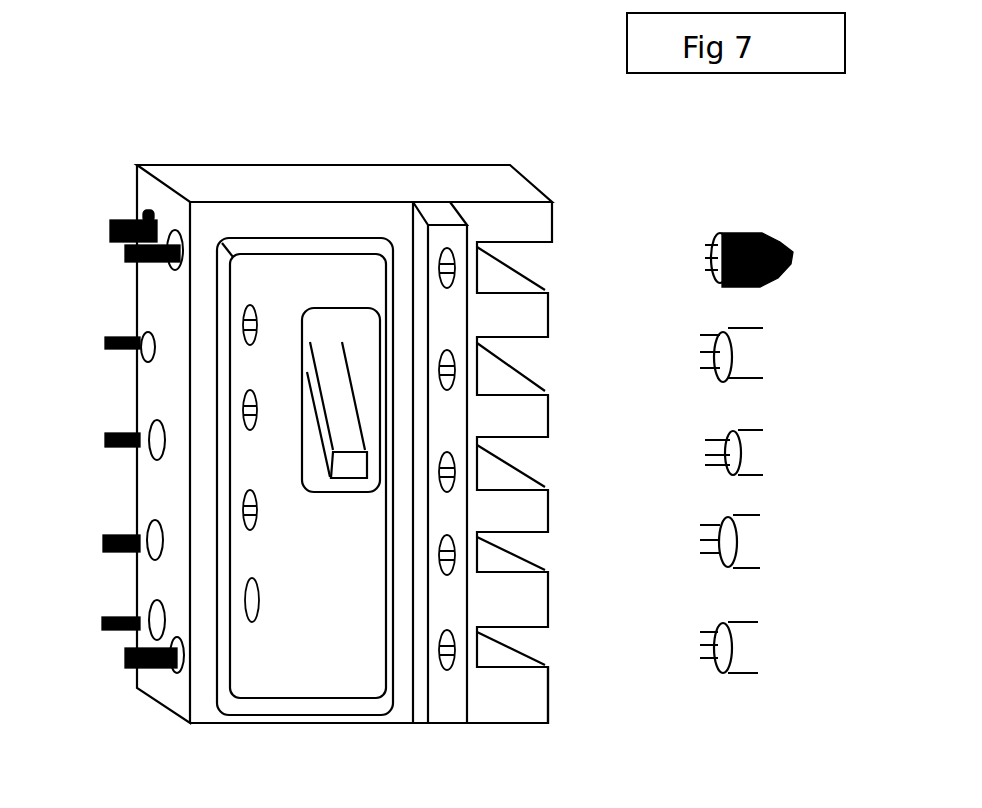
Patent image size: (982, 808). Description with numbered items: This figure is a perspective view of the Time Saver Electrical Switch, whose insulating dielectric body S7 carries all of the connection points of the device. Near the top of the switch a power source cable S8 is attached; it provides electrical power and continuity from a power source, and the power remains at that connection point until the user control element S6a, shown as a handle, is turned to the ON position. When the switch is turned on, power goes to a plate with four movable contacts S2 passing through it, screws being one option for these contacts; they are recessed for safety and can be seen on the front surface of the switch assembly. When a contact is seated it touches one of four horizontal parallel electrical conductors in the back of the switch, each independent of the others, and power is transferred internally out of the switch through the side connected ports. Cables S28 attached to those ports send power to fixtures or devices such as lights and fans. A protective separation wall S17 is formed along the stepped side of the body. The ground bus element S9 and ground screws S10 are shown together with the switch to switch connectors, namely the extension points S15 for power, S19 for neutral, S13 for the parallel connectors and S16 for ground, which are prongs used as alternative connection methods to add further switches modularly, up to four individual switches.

The dielectric body S7 is at (463, 192).
The power source cable S8 is at (738, 235).
The ground screws S10 is at (453, 268).
The ground bus element S9 is at (448, 315).
The user control element S6a is at (363, 405).
The cables going to devices S28 is at (743, 652).
The movable contacts S2 is at (252, 601).
The protective separation wall S17 is at (543, 697).
The extension points S15 is at (110, 232).
The extension points S19 is at (125, 256).
The extension points S13 is at (105, 345).
The extension points S16 is at (125, 660).